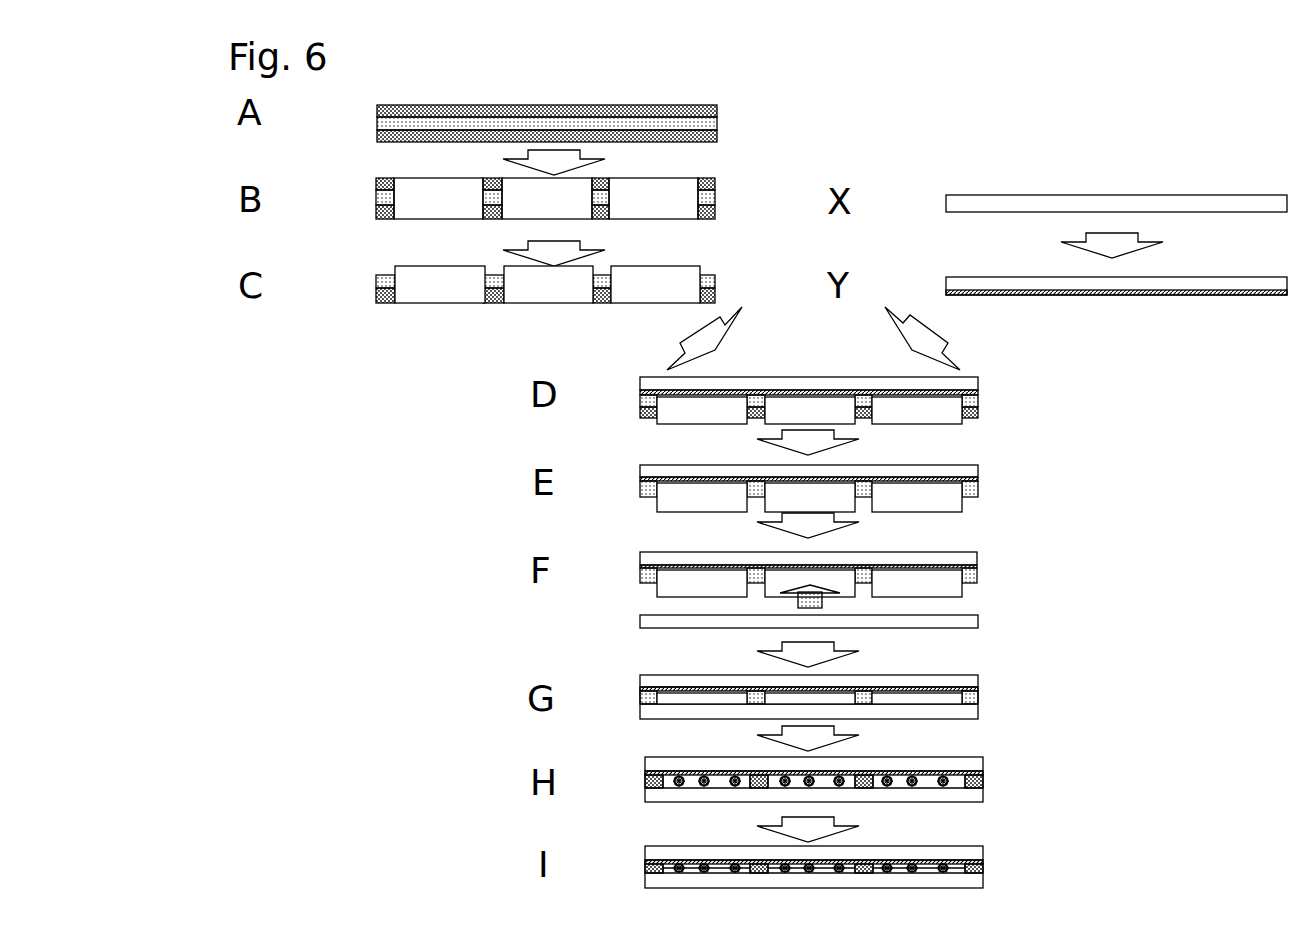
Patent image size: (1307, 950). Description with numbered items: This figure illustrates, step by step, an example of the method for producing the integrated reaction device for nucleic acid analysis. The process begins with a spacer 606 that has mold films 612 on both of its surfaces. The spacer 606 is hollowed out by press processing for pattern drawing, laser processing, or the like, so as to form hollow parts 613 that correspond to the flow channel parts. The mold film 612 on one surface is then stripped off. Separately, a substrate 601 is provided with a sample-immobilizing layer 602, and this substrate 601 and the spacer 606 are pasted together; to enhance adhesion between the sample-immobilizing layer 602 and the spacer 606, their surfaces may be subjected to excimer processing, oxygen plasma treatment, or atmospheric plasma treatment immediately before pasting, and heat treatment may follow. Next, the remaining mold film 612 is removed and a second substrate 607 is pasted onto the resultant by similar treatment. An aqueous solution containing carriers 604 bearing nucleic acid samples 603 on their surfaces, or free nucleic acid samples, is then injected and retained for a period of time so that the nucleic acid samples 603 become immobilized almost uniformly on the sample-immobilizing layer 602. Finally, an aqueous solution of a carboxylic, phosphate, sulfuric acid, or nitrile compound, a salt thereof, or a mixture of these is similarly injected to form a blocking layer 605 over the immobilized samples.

The mold film 612 is at (378, 108).
The spacer 606 is at (380, 124).
The hollow part 613 is at (663, 207).
The substrate 601 is at (955, 203).
The sample-immobilizing layer 602 is at (975, 290).
The second substrate 607 is at (963, 622).
The carrier 604 is at (655, 785).
The nucleic acid sample 603 is at (957, 788).
The blocking layer 605 is at (655, 865).